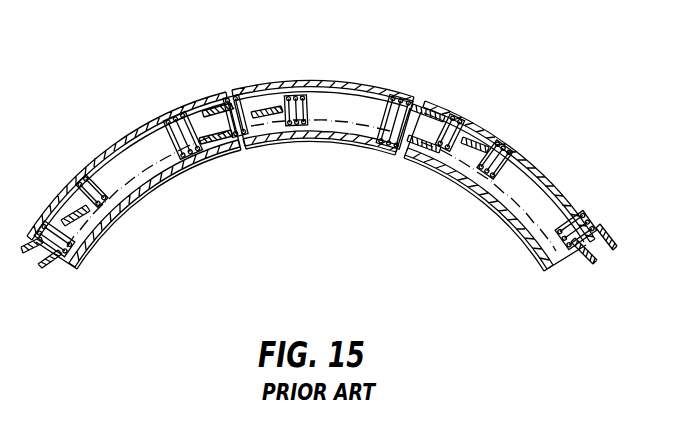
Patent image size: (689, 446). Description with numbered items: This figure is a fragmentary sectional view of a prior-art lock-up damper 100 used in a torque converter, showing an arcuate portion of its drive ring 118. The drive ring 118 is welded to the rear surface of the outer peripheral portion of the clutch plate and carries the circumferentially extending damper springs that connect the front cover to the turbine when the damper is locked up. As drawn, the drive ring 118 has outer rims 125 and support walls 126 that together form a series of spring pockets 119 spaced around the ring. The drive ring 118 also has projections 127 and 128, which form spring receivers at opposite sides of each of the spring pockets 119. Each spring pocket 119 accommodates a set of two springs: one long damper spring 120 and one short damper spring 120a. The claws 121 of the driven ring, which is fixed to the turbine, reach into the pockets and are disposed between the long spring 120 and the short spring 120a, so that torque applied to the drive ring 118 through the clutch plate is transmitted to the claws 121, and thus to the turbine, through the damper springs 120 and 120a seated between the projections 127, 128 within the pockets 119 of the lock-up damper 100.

The lock-up damper 100 is at (572, 158).
The drive ring 118 is at (499, 117).
The spring pockets 119 is at (352, 108).
The damper spring 120 is at (393, 100).
The short damper spring 120a is at (236, 96).
The claws 121 is at (265, 122).
The outer rims 125 is at (334, 72).
The support walls 126 is at (345, 143).
The projection 127 is at (206, 112).
The projection 128 is at (218, 142).